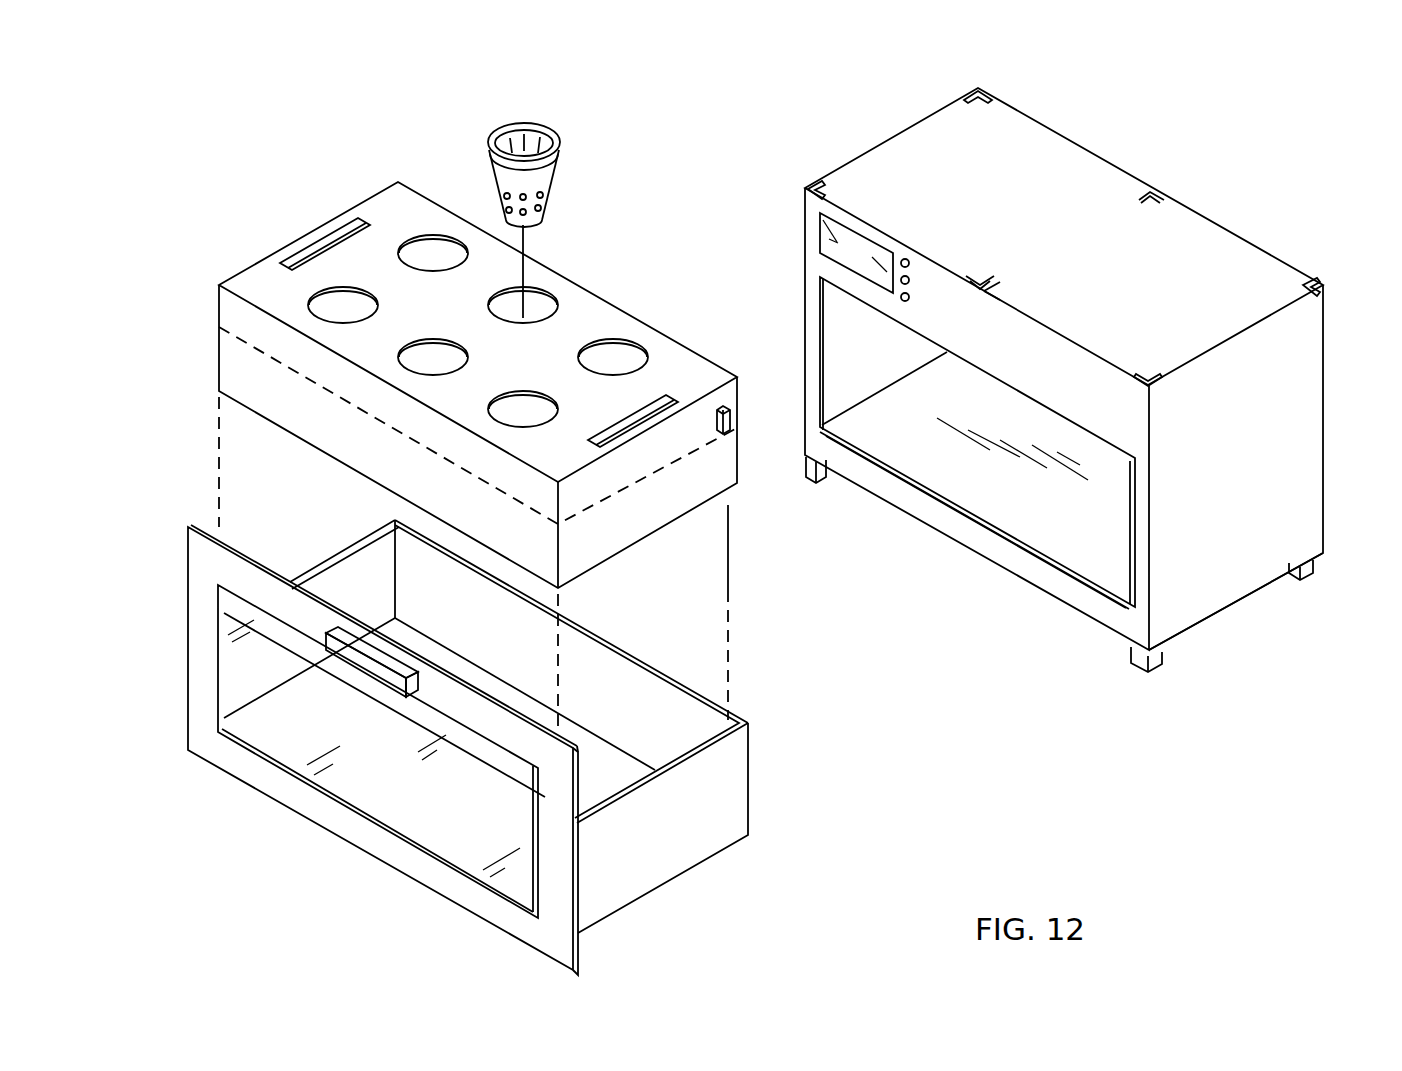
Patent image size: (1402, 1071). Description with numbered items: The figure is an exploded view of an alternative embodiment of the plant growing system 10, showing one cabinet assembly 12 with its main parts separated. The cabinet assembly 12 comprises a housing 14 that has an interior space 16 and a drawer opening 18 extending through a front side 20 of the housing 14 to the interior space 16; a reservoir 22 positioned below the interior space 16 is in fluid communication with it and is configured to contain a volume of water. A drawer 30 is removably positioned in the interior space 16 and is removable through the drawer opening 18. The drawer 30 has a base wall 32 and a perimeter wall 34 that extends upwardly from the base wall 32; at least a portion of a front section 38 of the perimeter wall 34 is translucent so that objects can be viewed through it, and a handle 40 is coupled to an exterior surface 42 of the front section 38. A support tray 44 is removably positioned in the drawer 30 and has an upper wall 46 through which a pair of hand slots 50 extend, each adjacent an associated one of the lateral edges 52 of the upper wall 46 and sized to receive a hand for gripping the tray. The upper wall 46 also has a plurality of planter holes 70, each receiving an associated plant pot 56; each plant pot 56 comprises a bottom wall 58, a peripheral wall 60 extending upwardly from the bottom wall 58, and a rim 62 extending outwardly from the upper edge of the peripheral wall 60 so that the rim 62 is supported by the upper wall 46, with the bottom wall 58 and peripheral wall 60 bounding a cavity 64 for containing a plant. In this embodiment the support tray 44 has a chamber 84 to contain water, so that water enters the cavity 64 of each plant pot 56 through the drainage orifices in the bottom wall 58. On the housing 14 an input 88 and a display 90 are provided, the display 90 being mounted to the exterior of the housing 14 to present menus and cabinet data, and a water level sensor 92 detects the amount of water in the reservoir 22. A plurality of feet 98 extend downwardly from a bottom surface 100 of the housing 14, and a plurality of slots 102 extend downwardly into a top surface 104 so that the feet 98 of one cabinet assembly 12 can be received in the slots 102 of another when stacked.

The plant growing system 10 is at (1224, 146).
The cabinet assembly 12 is at (1338, 306).
The housing 14 is at (1352, 440).
The interior space 16 is at (1078, 527).
The drawer opening 18 is at (1098, 592).
The front side 20 is at (998, 470).
The reservoir 22 is at (950, 518).
The drawer 30 is at (690, 896).
The base wall 32 is at (607, 767).
The perimeter wall 34 is at (717, 780).
The front section 38 is at (408, 790).
The handle 40 is at (353, 660).
The exterior surface 42 is at (205, 568).
The support tray 44 is at (650, 218).
The upper wall 46 is at (585, 320).
The hand slots 50 is at (317, 245).
The lateral edges 52 is at (262, 262).
The plant pot 56 is at (497, 100).
The bottom wall 58 is at (537, 227).
The peripheral wall 60 is at (540, 177).
The rim 62 is at (496, 147).
The cavity 64 is at (522, 135).
The planter holes 70 is at (437, 250).
The chamber 84 is at (325, 302).
The input 88 is at (918, 276).
The display 90 is at (833, 237).
The water level sensor 92 is at (731, 422).
The feet 98 is at (815, 476).
The bottom surface 100 is at (1247, 600).
The slots 102 is at (960, 93).
The top surface 104 is at (1220, 262).